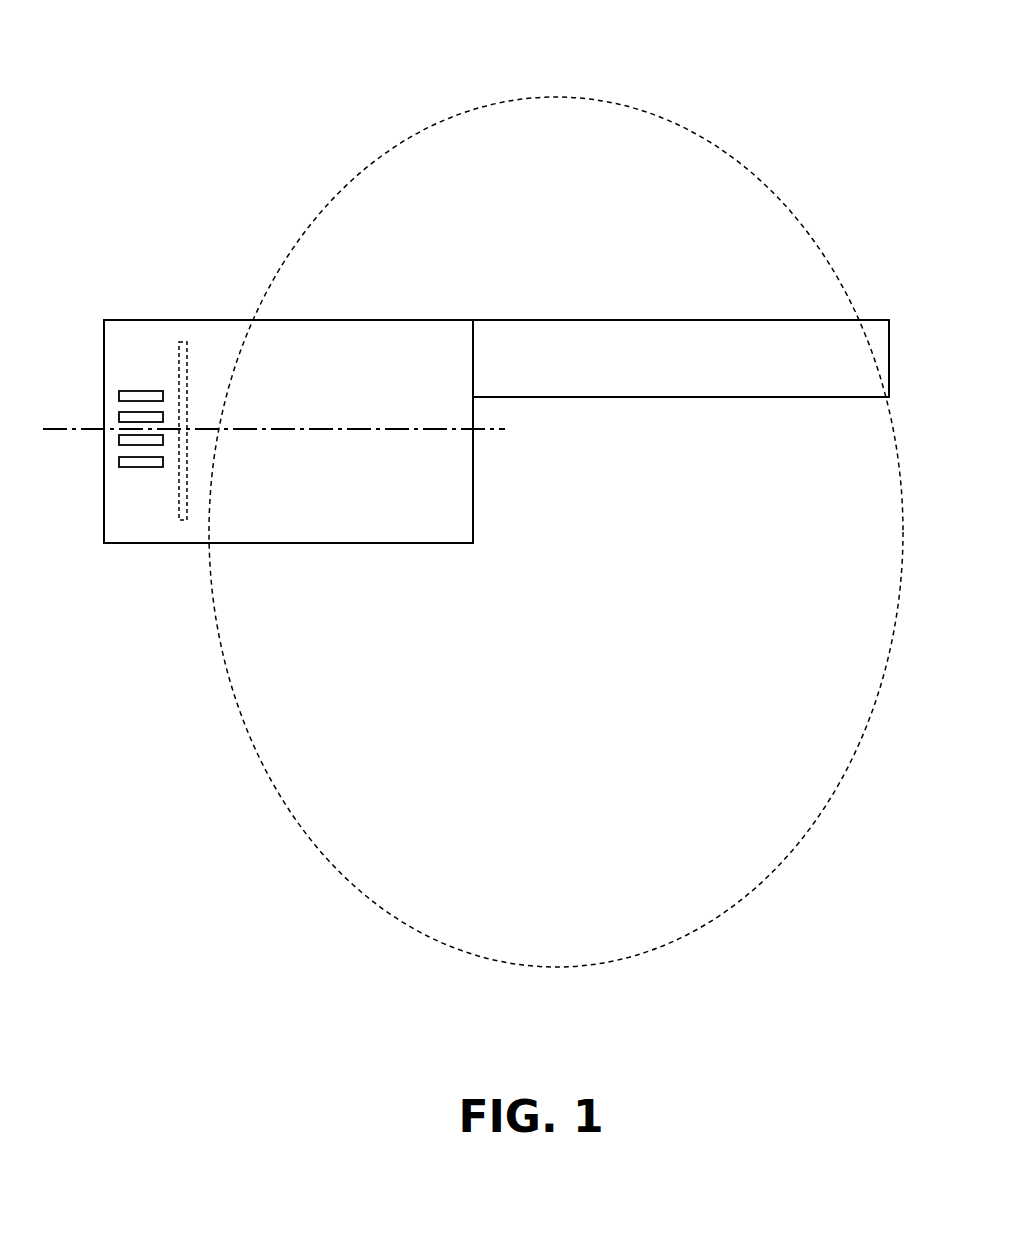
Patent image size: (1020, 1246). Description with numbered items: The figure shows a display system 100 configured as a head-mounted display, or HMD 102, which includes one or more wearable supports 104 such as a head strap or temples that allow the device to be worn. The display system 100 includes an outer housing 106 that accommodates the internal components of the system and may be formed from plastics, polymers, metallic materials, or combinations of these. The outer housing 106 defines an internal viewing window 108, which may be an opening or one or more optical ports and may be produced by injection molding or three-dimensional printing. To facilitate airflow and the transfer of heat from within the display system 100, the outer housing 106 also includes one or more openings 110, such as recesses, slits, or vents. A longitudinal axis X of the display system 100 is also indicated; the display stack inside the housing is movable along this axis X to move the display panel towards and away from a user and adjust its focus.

The display system 100 is at (757, 44).
The HMD 102 is at (232, 320).
The wearable support 104 is at (808, 348).
The outer housing 106 is at (152, 520).
The internal viewing window 108 is at (187, 383).
The opening 110 is at (148, 390).
The longitudinal axis X is at (298, 429).